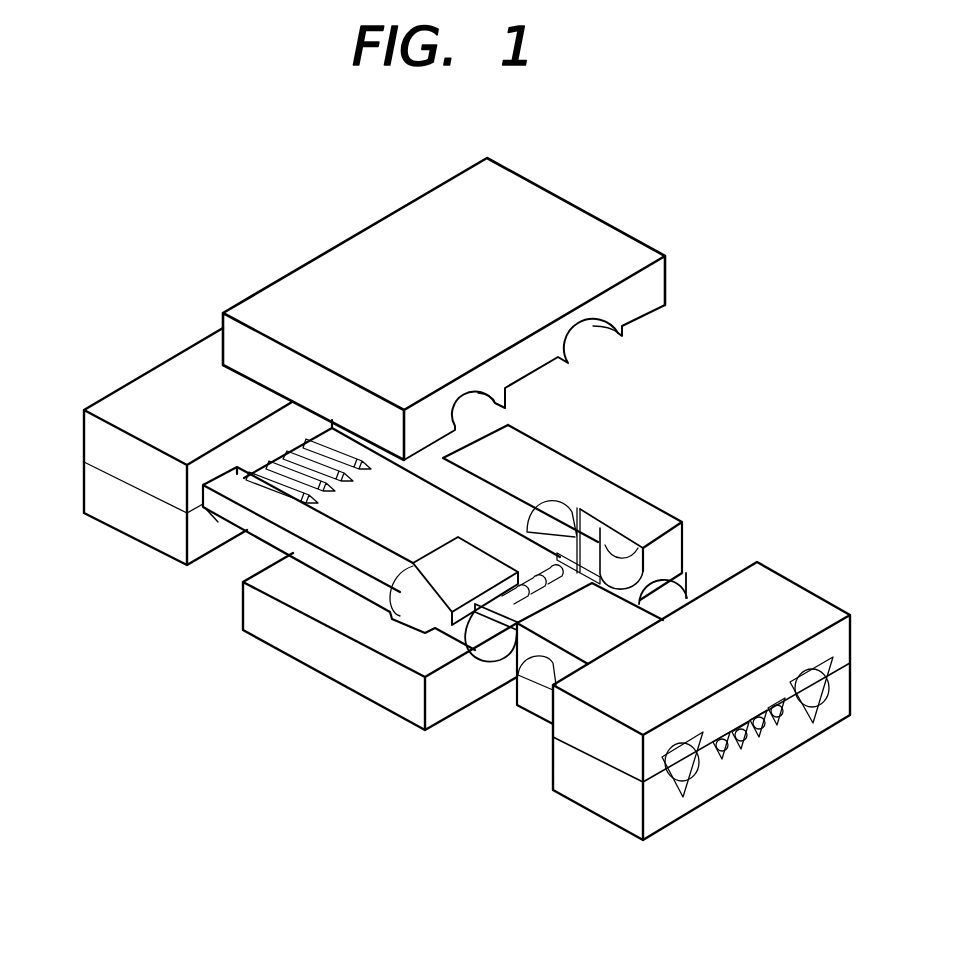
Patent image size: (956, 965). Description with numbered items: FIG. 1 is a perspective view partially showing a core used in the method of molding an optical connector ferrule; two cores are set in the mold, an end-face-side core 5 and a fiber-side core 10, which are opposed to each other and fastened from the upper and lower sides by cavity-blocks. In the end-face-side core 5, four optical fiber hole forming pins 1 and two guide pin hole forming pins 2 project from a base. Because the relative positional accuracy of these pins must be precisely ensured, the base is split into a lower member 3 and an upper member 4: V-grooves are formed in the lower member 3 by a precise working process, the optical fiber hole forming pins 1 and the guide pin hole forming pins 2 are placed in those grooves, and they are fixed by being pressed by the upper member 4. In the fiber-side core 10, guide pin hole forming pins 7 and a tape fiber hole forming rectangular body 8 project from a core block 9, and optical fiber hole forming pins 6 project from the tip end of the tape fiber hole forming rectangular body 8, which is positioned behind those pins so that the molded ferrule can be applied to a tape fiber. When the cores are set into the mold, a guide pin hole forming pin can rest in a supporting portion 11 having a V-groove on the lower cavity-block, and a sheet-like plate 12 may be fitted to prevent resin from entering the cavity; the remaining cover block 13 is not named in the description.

The optical fiber hole forming pins 1 is at (385, 477).
The guide pin hole forming pins 2 is at (275, 530).
The lower member 3 is at (165, 542).
The upper member 4 is at (121, 467).
The end-face-side core 5 is at (169, 499).
The optical fiber hole forming pins 6 is at (580, 540).
The guide pin hole forming pins 7 is at (601, 624).
The tape fiber hole forming rectangular body 8 is at (678, 595).
The core block 9 is at (779, 599).
The fiber-side core 10 is at (883, 522).
The supporting portion 11 is at (486, 644).
The sheet-like plate 12 is at (298, 648).
The cover 13 is at (655, 291).